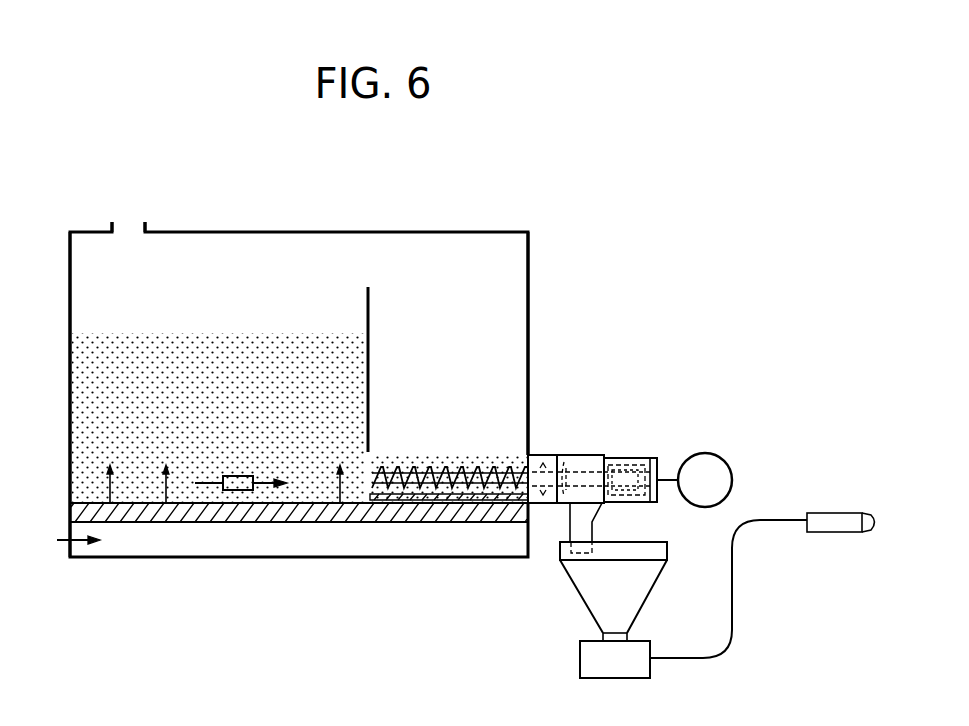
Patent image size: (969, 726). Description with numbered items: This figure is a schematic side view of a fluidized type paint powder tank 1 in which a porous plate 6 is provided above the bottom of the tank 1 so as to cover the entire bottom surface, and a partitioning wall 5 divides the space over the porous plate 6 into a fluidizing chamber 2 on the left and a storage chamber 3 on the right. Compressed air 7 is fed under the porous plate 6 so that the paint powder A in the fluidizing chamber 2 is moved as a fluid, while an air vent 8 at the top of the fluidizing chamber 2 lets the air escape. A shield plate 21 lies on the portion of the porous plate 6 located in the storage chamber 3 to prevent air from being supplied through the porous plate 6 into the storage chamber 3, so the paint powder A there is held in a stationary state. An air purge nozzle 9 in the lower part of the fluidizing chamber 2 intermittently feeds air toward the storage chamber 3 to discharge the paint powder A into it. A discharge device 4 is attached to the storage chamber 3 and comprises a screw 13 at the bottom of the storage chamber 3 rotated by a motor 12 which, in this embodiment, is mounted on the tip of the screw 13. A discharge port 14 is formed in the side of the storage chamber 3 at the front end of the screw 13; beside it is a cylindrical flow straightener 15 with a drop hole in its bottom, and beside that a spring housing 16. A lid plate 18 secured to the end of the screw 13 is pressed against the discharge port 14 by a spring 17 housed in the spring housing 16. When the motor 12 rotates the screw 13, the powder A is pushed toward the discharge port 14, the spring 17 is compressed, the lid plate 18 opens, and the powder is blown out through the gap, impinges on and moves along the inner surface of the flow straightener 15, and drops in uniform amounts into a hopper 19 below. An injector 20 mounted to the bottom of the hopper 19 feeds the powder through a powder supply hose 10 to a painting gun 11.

The paint powder tank 1 is at (325, 232).
The fluidizing chamber 2 is at (90, 300).
The storage chamber 3 is at (530, 318).
The discharge device 4 is at (620, 451).
The partitioning wall 5 is at (372, 300).
The porous plate 6 is at (290, 523).
The compressed air 7 is at (62, 543).
The air vent 8 is at (128, 226).
The air purge nozzle 9 is at (236, 491).
The powder supply hose 10 is at (733, 620).
The painting gun 11 is at (832, 512).
The motor 12 is at (729, 478).
The screw 13 is at (463, 489).
The discharge port 14 is at (540, 455).
The flow straightener 15 is at (592, 455).
The spring housing 16 is at (657, 459).
The spring 17 is at (641, 462).
The lid plate 18 is at (572, 455).
The hopper 19 is at (592, 595).
The injector 20 is at (590, 660).
The shield plate 21 is at (376, 501).
The paint powder A is at (85, 396).